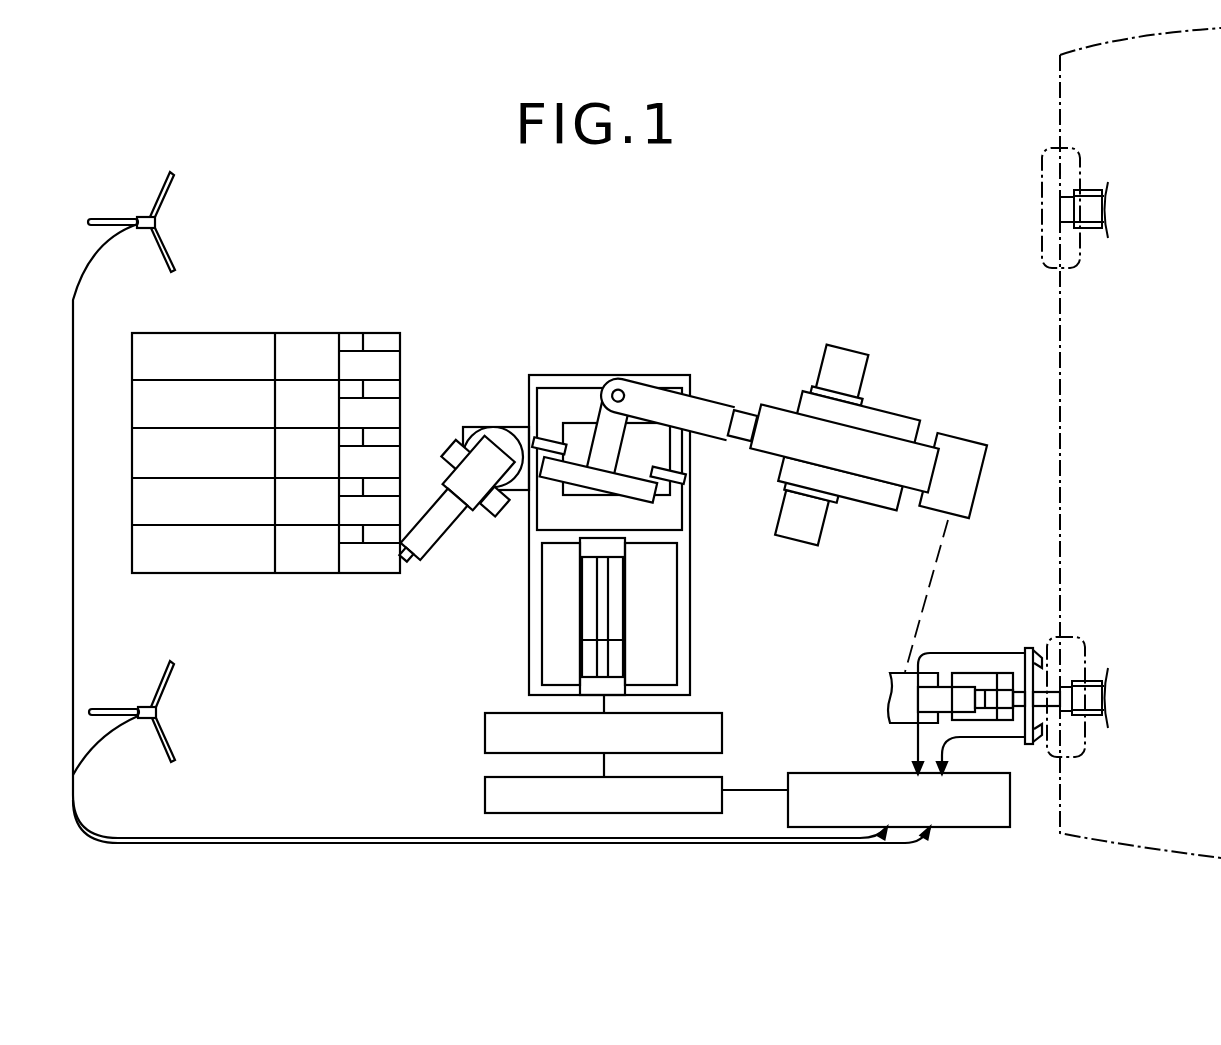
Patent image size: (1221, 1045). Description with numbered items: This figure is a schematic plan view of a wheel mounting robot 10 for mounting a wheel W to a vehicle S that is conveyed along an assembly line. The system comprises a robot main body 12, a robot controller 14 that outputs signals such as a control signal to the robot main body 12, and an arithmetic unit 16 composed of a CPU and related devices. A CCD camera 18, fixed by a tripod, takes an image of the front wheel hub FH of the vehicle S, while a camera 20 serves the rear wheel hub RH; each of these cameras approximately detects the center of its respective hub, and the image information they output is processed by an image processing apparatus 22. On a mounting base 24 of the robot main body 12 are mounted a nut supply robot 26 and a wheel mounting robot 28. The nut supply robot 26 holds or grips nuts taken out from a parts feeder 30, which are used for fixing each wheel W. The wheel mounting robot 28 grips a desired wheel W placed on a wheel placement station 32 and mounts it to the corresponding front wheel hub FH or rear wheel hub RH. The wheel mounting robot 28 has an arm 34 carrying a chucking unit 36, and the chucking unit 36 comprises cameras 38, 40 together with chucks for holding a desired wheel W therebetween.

The wheel mounting robot 10 is at (672, 225).
The robot main body 12 is at (562, 499).
The robot controller 14 is at (722, 722).
The arithmetic unit 16 is at (722, 790).
The CCD camera 18 is at (146, 720).
The camera 20 is at (147, 230).
The image processing apparatus 22 is at (838, 772).
The mounting base 24 is at (530, 630).
The nut supply robot 26 is at (438, 522).
The wheel mounting robot 28 is at (854, 498).
The parts feeder 30 is at (233, 568).
The wheel placement station 32 is at (672, 627).
The arm 34 is at (860, 490).
The chucking unit 36 is at (928, 678).
The camera 38 is at (1036, 655).
The camera 40 is at (1035, 740).
The wheel W is at (1043, 195).
The front wheel hub FH is at (1105, 680).
The rear wheel hub RH is at (1066, 208).
The vehicle S is at (1100, 815).